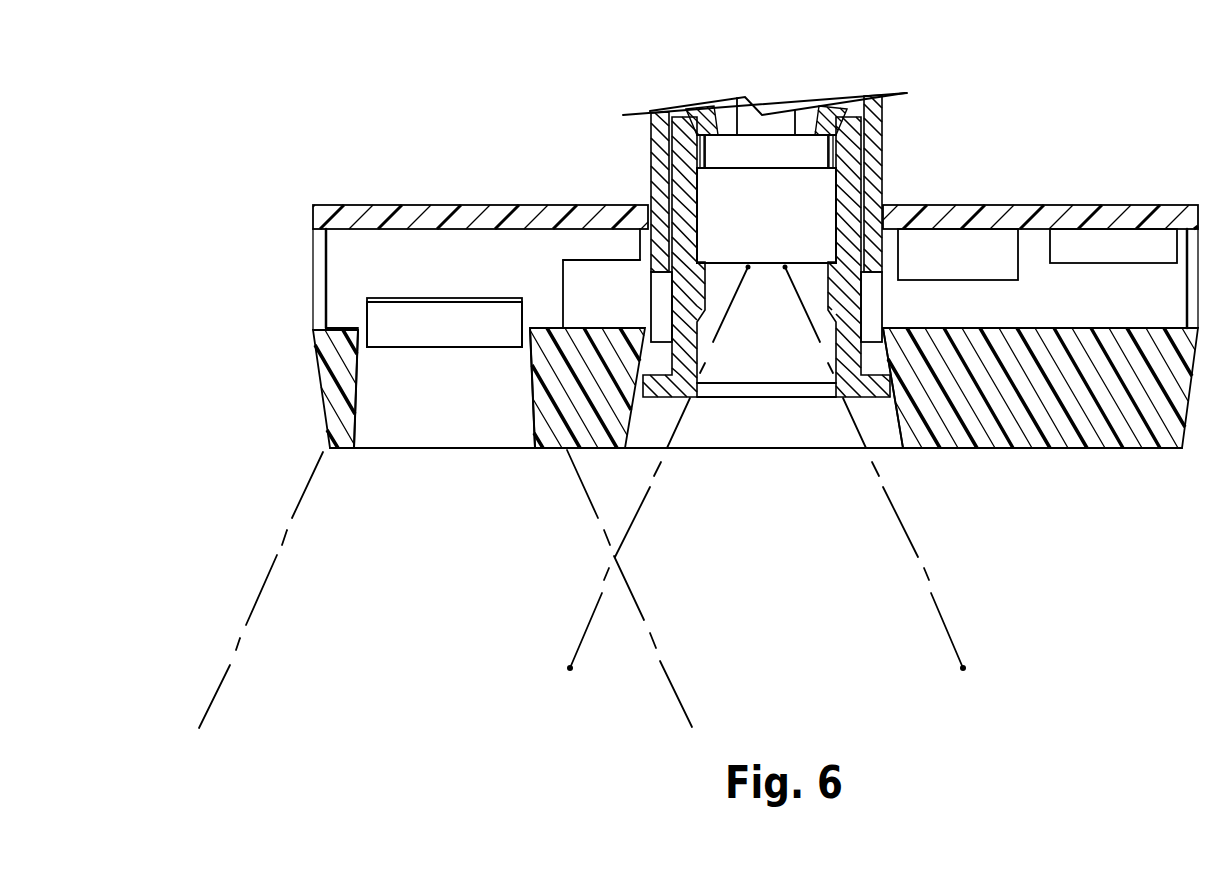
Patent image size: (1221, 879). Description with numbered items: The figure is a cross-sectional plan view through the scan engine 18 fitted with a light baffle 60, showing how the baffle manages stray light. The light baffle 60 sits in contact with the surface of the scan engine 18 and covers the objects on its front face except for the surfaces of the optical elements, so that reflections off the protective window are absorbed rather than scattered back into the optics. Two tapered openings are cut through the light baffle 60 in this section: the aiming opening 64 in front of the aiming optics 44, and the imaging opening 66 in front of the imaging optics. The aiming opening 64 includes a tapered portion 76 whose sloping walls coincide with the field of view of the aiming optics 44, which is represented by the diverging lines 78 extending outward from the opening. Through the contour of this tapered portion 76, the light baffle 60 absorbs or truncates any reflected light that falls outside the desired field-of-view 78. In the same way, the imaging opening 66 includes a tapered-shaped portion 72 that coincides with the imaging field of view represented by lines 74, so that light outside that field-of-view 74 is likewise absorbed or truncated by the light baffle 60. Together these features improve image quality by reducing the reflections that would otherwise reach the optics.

The scan engine 18 is at (997, 88).
The aiming optics 44 is at (388, 313).
The light baffle 60 is at (318, 364).
The aiming opening 64 is at (432, 387).
The imaging opening 66 is at (787, 425).
The tapered-shaped portion 72 is at (625, 415).
The field-of-view lines 74 is at (603, 593).
The tapered portion 76 is at (353, 420).
The field-of-view lines 78 is at (258, 593).